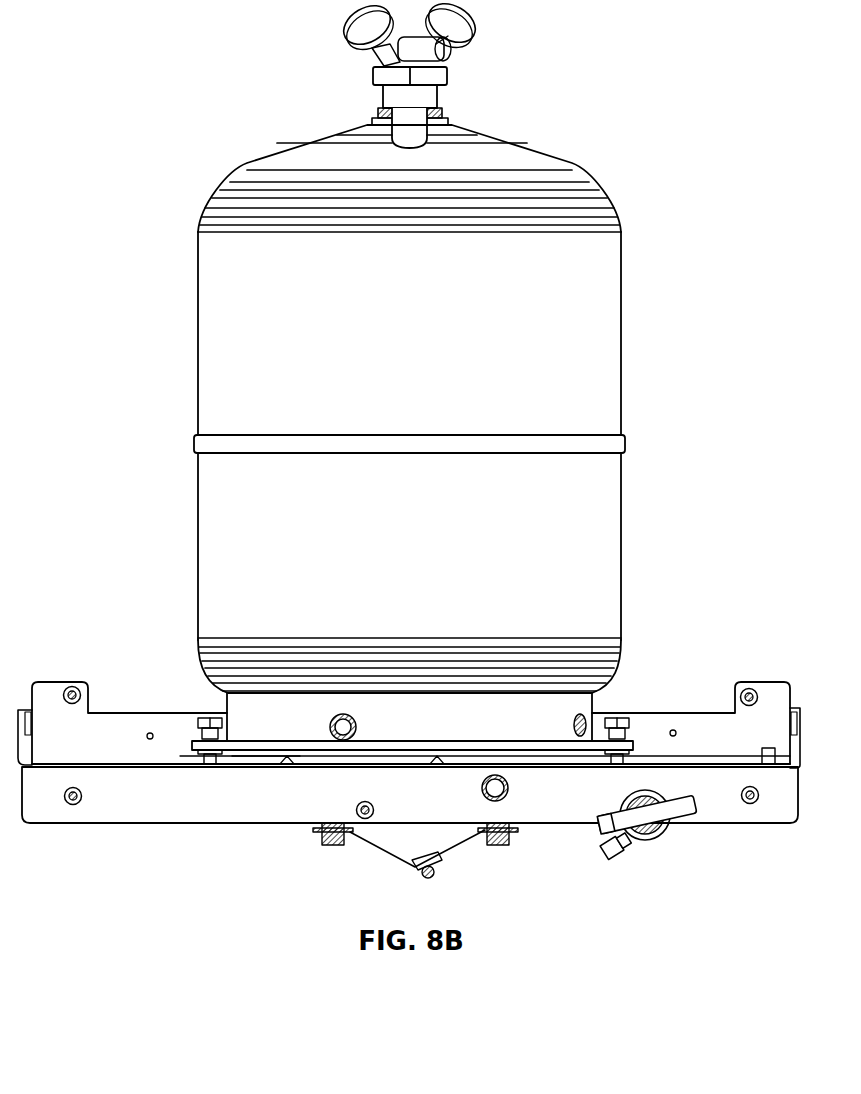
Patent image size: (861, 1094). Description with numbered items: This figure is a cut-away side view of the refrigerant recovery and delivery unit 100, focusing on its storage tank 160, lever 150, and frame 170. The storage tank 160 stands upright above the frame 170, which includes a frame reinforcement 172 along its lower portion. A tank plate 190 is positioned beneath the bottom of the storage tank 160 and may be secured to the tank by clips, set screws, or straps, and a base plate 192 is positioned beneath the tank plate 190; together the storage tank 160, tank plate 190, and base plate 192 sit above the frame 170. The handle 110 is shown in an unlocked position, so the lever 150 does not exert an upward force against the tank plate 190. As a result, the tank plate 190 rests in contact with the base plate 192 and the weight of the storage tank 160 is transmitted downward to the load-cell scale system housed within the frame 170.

The refrigerant recovery and delivery unit 100 is at (548, 100).
The storage tank 160 is at (597, 320).
The frame 170 is at (748, 737).
The tank plate 190 is at (192, 748).
The base plate 192 is at (262, 760).
The frame reinforcement 172 is at (725, 800).
The lever 150 is at (412, 833).
The handle 110 is at (667, 818).